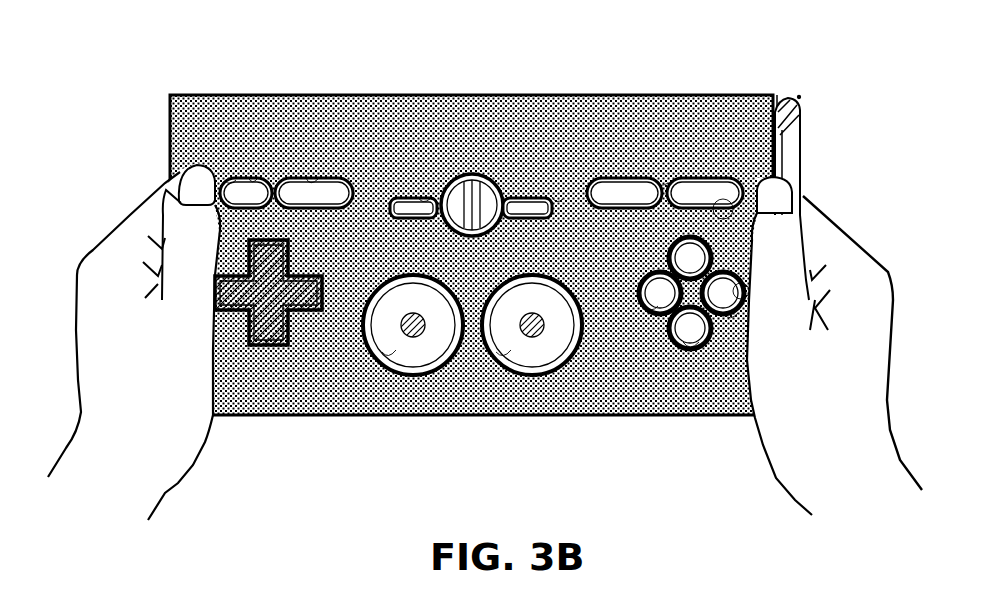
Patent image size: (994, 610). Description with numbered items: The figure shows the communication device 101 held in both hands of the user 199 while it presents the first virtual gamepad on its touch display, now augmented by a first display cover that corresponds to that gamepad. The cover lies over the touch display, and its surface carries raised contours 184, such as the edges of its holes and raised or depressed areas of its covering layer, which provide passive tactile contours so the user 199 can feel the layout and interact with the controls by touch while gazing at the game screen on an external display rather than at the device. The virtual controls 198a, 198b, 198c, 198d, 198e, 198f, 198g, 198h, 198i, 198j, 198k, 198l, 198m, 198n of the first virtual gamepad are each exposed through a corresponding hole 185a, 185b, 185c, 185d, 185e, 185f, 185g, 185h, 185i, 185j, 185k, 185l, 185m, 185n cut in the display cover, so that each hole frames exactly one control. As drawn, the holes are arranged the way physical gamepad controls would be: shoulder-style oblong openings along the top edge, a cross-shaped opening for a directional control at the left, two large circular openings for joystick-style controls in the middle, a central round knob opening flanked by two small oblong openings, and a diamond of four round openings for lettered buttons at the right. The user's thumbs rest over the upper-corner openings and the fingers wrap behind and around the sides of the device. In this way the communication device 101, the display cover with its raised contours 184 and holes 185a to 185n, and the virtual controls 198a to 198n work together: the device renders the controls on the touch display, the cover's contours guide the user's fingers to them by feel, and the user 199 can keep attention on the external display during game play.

The communication device 101 is at (776, 168).
The raised contours 184 is at (611, 123).
The user 199 is at (897, 458).
The hole 185a is at (705, 340).
The hole 185b is at (648, 286).
The hole 185c is at (490, 350).
The hole 185d is at (372, 355).
The hole 185e is at (298, 300).
The hole 185f is at (238, 180).
The hole 185g is at (292, 180).
The hole 185h is at (393, 197).
The hole 185i is at (471, 176).
The hole 185j is at (522, 199).
The hole 185k is at (615, 182).
The hole 185l is at (735, 220).
The hole 185m is at (705, 240).
The hole 185n is at (745, 282).
The virtual control 198a is at (690, 346).
The virtual control 198b is at (652, 310).
The virtual control 198c is at (503, 350).
The virtual control 198d is at (390, 350).
The virtual control 198e is at (270, 345).
The virtual control 198f is at (225, 181).
The virtual control 198g is at (248, 177).
The virtual control 198h is at (306, 178).
The virtual control 198i is at (418, 197).
The virtual control 198j is at (552, 197).
The virtual control 198k is at (800, 97).
The virtual control 198l is at (657, 182).
The virtual control 198m is at (748, 285).
The virtual control 198n is at (730, 316).